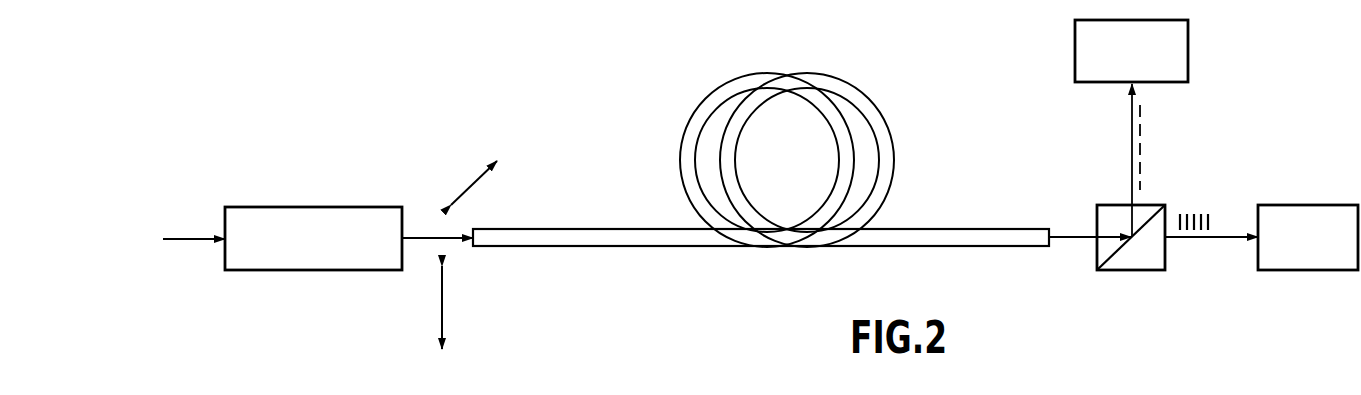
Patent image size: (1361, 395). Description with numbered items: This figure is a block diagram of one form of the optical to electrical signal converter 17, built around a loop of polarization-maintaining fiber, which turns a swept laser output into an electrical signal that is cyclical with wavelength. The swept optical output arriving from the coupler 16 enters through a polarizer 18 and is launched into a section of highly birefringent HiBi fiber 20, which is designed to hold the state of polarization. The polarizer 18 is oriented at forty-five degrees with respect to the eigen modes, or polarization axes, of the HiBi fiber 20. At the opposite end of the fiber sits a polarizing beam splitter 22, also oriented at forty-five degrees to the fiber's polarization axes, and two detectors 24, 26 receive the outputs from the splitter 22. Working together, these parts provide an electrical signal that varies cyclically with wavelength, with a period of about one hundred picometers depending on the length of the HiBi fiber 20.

The second coupler 16 is at (168, 240).
The optical to electrical signal converter 17 is at (522, 40).
The polarizer 18 is at (315, 207).
The HiBi fiber 20 is at (755, 247).
The polarizing beam splitter 22 is at (1131, 270).
The detector 24 is at (1188, 50).
The detector 26 is at (1316, 205).